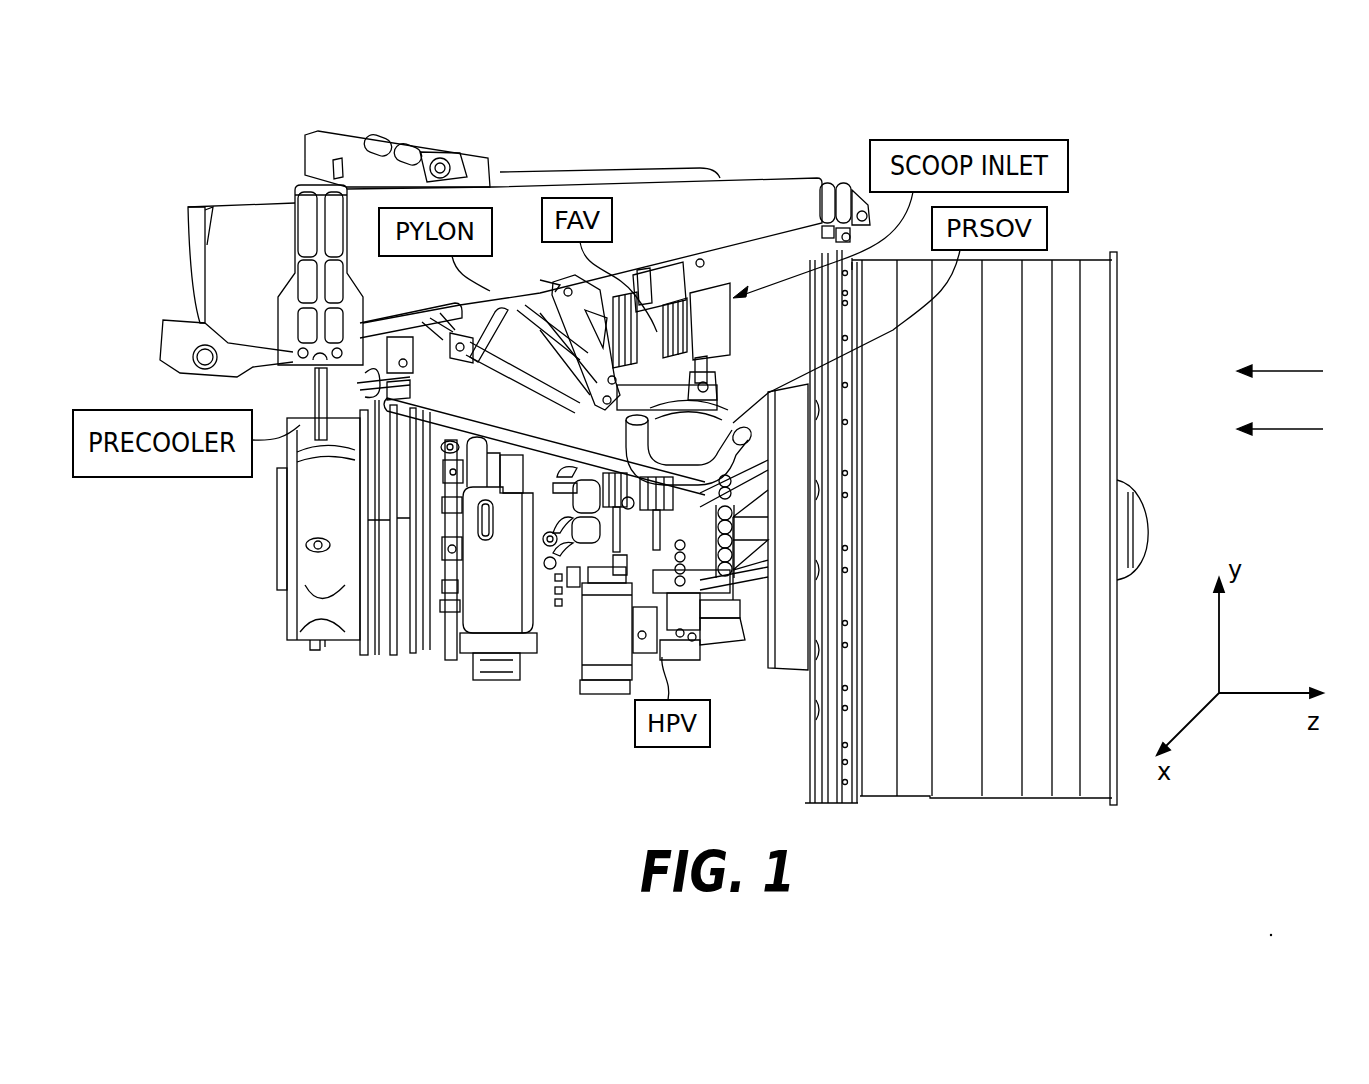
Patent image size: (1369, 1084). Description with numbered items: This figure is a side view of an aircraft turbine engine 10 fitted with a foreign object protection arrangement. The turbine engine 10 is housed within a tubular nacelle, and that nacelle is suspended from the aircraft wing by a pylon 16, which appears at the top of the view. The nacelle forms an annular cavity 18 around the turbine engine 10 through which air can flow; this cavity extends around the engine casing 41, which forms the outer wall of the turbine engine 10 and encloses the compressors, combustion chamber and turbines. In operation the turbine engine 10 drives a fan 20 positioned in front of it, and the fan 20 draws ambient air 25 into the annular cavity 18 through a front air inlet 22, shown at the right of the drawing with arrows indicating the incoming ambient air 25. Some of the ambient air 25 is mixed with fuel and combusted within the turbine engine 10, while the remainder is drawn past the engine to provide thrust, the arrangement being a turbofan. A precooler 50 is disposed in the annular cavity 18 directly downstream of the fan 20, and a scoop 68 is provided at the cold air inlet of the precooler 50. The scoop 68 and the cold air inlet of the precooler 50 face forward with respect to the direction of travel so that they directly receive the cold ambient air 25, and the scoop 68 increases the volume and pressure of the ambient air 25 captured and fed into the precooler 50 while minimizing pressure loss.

The turbine engine 10 is at (565, 677).
The pylon 16 is at (488, 202).
The annular cavity 18 is at (798, 268).
The fan 20 is at (1037, 797).
The front air inlet 22 is at (1118, 297).
The ambient air 25 is at (1280, 382).
The engine casing 41 is at (433, 660).
The precooler 50 is at (533, 317).
The scoop 68 is at (658, 330).